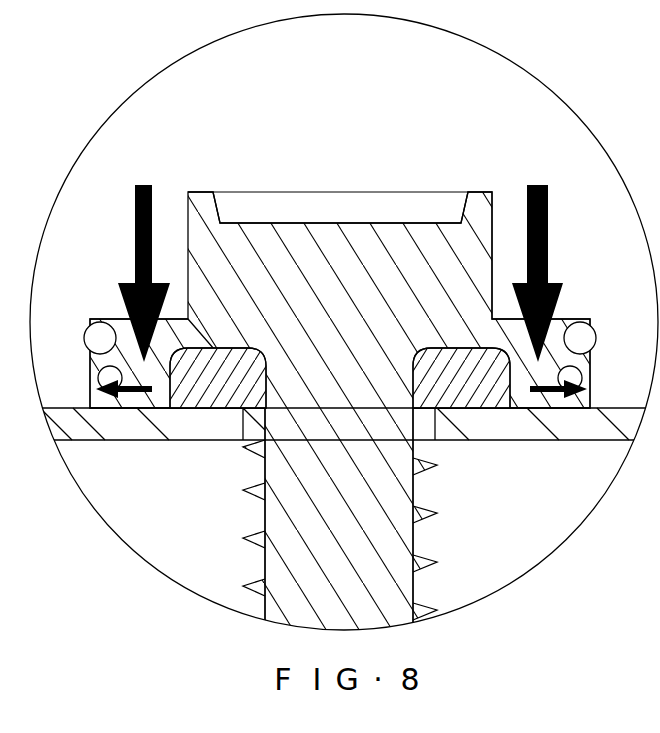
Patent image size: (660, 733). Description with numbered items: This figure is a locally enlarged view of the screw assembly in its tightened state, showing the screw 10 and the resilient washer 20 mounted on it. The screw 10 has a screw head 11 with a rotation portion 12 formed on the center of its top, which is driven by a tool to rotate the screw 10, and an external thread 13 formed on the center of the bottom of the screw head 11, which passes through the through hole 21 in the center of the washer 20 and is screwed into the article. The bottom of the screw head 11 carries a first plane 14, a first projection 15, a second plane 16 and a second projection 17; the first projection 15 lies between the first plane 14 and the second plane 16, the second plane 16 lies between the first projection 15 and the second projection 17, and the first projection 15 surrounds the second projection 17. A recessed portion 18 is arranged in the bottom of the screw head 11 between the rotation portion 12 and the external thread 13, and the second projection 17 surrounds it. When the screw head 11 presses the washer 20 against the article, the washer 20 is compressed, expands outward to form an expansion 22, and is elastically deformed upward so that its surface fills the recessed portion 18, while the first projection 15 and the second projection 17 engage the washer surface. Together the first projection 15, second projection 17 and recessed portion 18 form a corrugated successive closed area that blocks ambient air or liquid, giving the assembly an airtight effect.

The screw 10 is at (340, 342).
The screw head 11 is at (575, 322).
The rotation portion 12 is at (338, 245).
The external thread 13 is at (254, 578).
The first plane 14 is at (96, 323).
The first projection 15 is at (110, 348).
The second plane 16 is at (150, 400).
The second projection 17 is at (167, 345).
The recessed portion 18 is at (449, 352).
The washer 20 is at (497, 395).
The through hole 21 is at (240, 412).
The expansion 22 is at (587, 389).